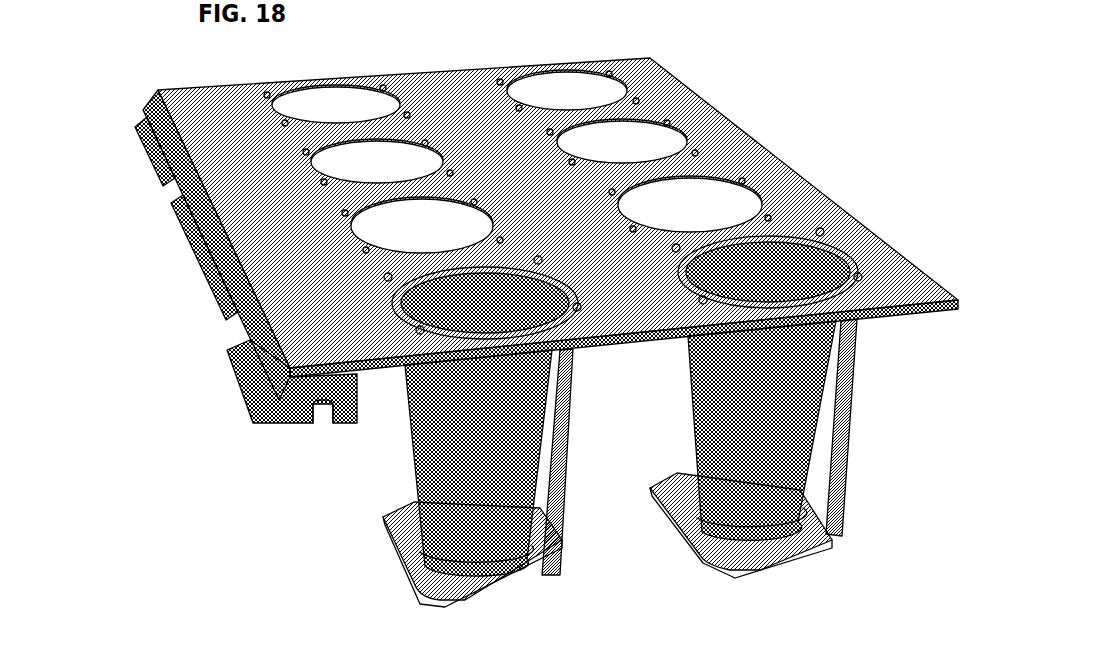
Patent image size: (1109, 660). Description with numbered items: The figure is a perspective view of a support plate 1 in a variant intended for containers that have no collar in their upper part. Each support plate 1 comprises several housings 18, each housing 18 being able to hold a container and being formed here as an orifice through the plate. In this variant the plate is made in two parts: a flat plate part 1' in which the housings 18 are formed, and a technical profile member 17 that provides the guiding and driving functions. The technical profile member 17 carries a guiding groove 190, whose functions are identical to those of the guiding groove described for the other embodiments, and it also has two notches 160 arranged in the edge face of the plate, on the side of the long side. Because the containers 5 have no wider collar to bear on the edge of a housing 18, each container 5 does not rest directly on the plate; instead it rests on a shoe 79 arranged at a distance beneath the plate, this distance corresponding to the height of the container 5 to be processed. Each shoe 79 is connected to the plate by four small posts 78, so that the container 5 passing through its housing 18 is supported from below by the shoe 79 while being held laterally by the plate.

The support plate 1 is at (500, 217).
The flat plate part 1' is at (195, 245).
The technical profile member for guiding and driving 17 is at (168, 285).
The notch 160 is at (220, 328).
The guiding groove 190 is at (320, 420).
The housing 18 is at (636, 147).
The container 5 is at (410, 442).
The small post 78 is at (847, 433).
The shoe 79 is at (693, 538).